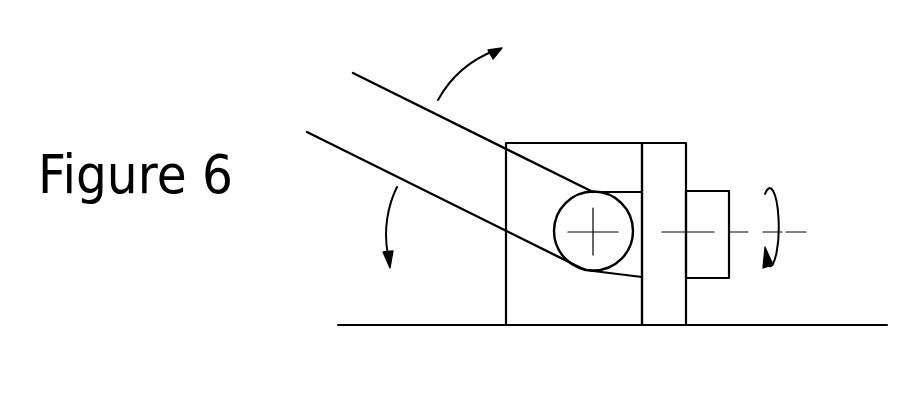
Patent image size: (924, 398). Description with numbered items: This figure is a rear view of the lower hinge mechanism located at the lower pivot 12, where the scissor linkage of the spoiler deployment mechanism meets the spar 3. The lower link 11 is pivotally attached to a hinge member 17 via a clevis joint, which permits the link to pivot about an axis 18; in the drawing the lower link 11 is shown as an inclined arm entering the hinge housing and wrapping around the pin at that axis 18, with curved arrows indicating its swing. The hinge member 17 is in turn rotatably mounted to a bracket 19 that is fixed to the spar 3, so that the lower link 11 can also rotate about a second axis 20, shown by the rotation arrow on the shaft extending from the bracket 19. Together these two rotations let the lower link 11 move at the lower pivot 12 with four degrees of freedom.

The spar 3 is at (398, 332).
The lower link 11 is at (340, 146).
The lower pivot 12 is at (590, 127).
The hinge member 17 is at (703, 190).
The axis 18 is at (593, 234).
The bracket 19 is at (657, 326).
The axis 20 is at (808, 226).